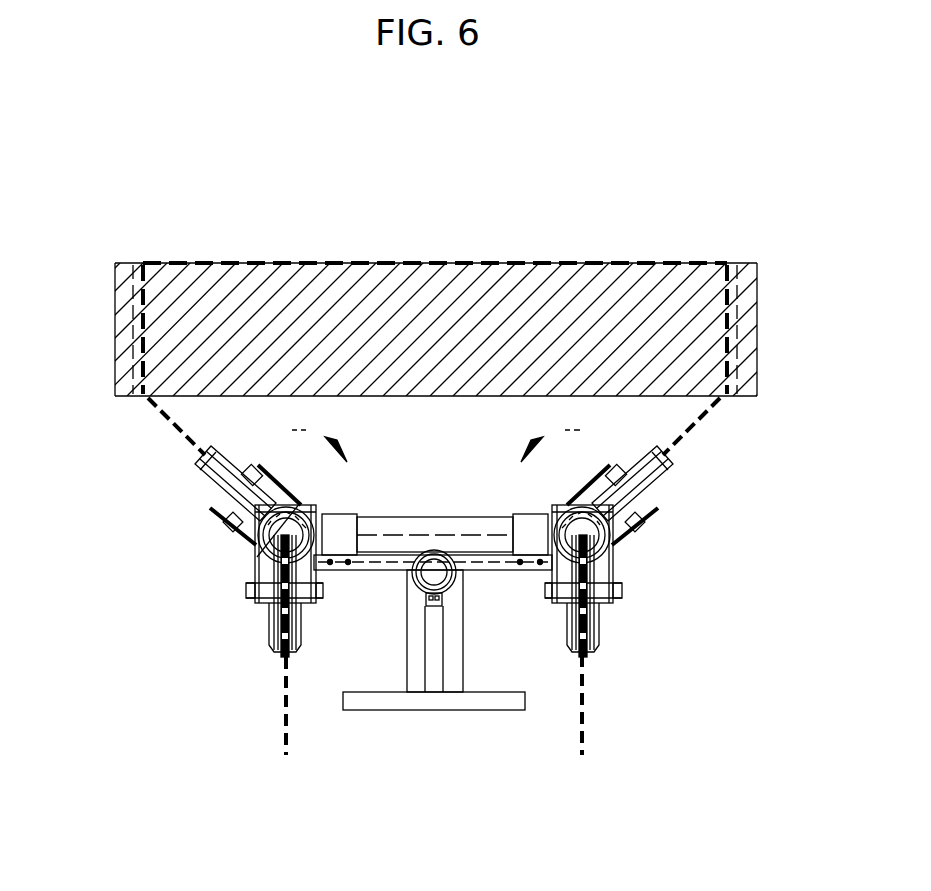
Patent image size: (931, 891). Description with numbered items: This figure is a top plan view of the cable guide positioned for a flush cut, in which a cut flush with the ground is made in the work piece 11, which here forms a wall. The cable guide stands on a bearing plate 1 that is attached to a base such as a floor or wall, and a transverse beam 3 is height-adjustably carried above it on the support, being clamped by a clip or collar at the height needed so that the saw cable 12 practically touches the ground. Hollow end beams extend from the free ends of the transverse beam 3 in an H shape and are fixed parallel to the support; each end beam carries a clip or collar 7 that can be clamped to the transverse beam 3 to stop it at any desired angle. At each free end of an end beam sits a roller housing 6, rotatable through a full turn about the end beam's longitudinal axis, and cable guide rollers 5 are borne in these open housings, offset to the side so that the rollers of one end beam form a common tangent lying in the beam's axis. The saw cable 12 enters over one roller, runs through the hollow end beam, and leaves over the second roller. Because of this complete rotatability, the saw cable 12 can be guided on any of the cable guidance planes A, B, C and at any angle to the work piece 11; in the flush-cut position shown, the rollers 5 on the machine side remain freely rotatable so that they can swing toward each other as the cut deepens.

The bearing plate 1 is at (459, 665).
The transverse beam 3 is at (587, 603).
The cable guide rollers 5 is at (222, 490).
The roller housing 6 is at (253, 577).
The clip or collar 7 is at (342, 568).
The work piece 11 is at (622, 348).
The saw cable 12 is at (578, 750).
The cable guidance plane A is at (283, 697).
The cable guidance plane B is at (167, 422).
The cable guidance plane C is at (257, 557).